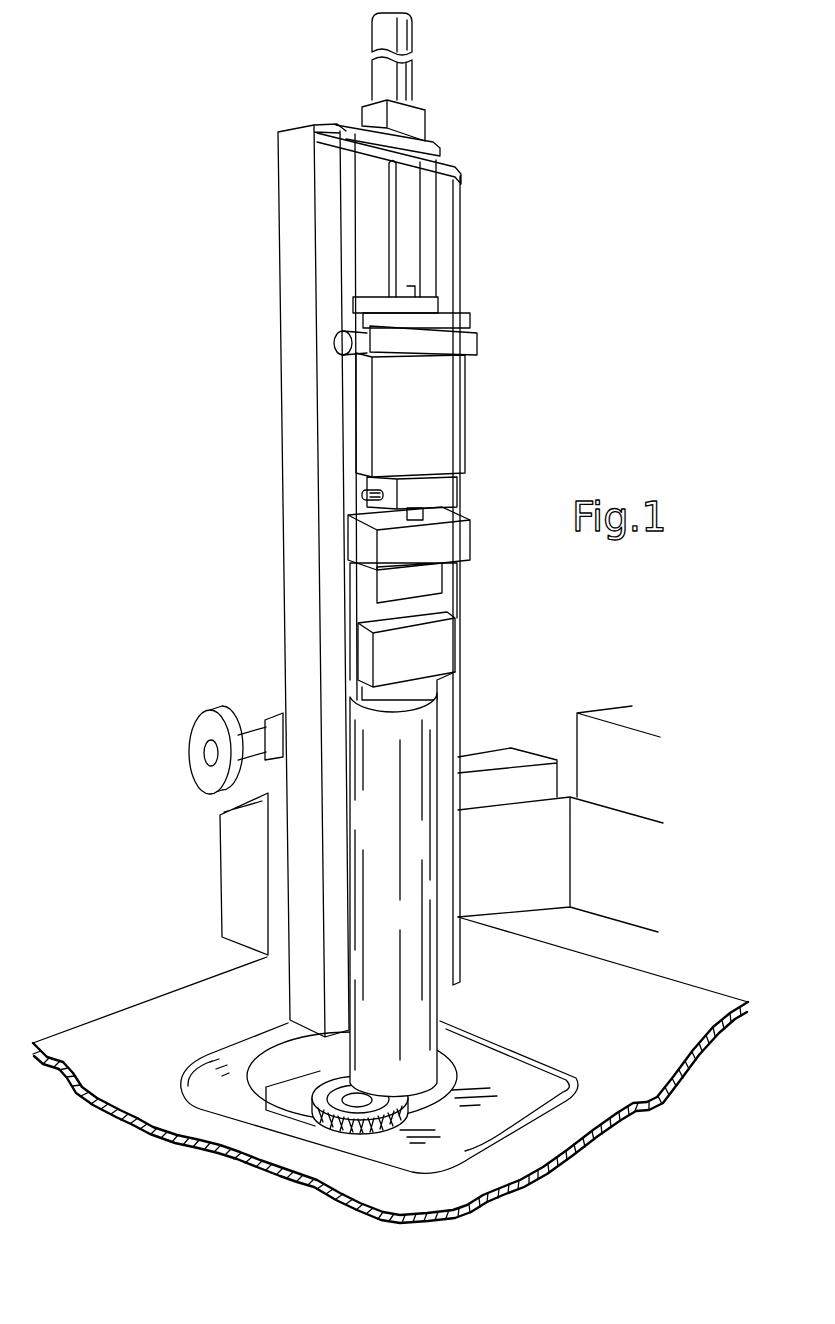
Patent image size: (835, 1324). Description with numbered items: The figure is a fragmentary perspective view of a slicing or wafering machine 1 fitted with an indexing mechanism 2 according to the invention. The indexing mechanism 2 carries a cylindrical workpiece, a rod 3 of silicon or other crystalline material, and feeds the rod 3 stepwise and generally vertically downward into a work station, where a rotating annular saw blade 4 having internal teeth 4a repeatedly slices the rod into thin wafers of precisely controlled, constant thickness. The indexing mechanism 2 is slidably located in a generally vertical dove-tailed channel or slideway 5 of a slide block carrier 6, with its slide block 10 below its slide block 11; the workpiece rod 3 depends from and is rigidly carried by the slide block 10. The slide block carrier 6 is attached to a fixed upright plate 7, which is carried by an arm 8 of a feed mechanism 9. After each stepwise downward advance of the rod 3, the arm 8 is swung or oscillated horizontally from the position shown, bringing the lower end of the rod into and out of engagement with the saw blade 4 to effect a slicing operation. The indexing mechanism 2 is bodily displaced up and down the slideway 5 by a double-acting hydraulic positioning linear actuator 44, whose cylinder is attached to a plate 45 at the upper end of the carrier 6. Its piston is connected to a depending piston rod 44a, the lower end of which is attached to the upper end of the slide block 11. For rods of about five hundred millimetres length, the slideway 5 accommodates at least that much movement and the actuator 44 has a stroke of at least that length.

The slicing or wafering machine 1 is at (171, 1162).
The indexing mechanism 2 is at (489, 472).
The rod 3 is at (396, 851).
The saw blade 4 is at (365, 1142).
The internal teeth 4a is at (247, 1090).
The slideway 5 is at (357, 272).
The slide block carrier 6 is at (293, 522).
The fixed upright plate 7 is at (273, 784).
The arm 8 is at (522, 863).
The feed mechanism 9 is at (565, 722).
The slide block 10 is at (421, 599).
The slide block 11 is at (430, 424).
The positioning linear actuator 44 is at (413, 35).
The piston rod 44a is at (393, 230).
The plate 45 is at (426, 125).